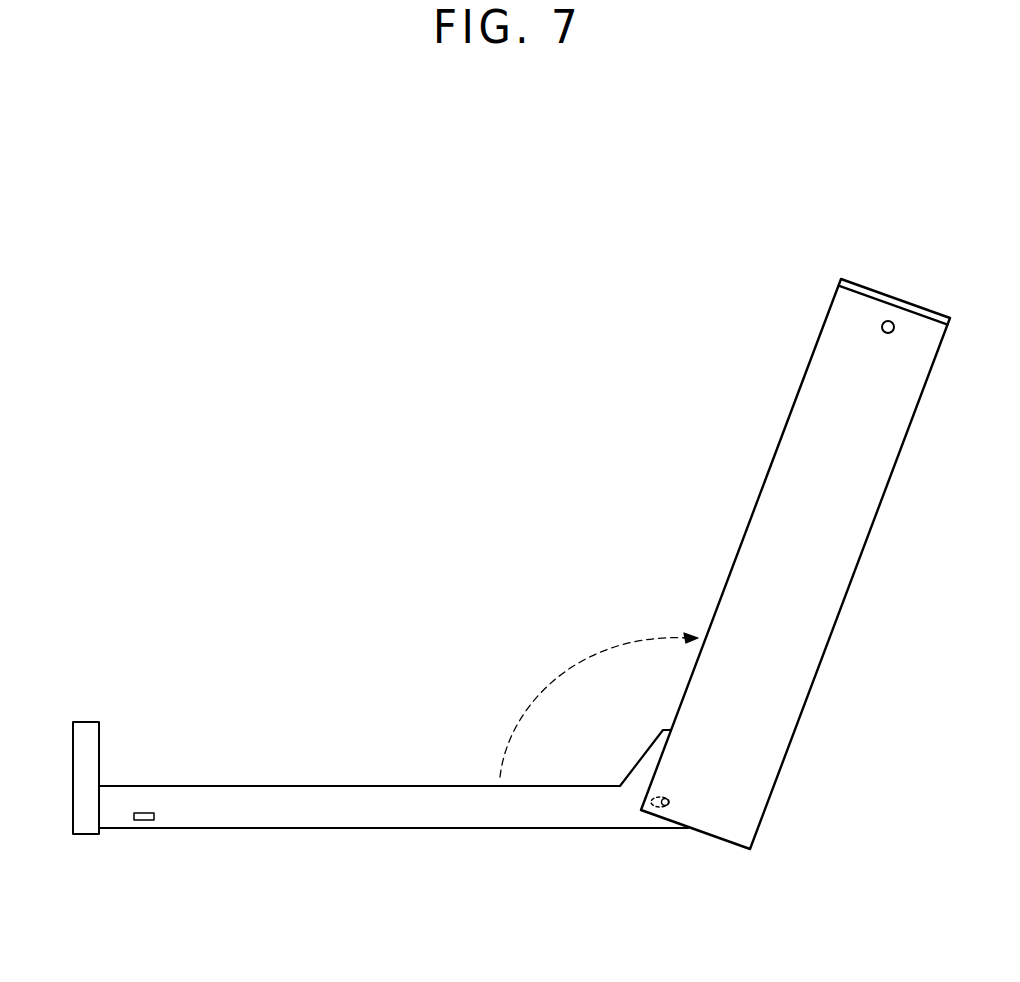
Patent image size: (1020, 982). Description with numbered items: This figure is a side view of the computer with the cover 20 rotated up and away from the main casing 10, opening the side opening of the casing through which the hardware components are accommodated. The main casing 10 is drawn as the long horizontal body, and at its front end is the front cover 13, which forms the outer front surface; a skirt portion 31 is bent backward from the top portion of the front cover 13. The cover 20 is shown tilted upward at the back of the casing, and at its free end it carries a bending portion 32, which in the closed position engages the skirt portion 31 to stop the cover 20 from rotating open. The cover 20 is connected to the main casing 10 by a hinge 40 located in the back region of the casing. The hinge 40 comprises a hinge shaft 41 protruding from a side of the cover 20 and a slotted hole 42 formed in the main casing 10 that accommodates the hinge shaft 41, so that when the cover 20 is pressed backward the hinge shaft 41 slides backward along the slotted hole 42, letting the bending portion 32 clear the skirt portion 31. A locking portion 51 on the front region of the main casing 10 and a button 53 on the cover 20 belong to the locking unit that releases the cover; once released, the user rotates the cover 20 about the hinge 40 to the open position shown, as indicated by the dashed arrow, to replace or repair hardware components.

The main casing 10 is at (268, 829).
The front cover 13 is at (73, 811).
The cover 20 is at (771, 490).
The skirt portion 31 is at (90, 722).
The bending portion 32 is at (893, 294).
The hinge 40 is at (673, 908).
The hinge shaft 41 is at (668, 806).
The slotted hole 42 is at (652, 812).
The locking portion 51 is at (145, 822).
The button 53 is at (882, 327).